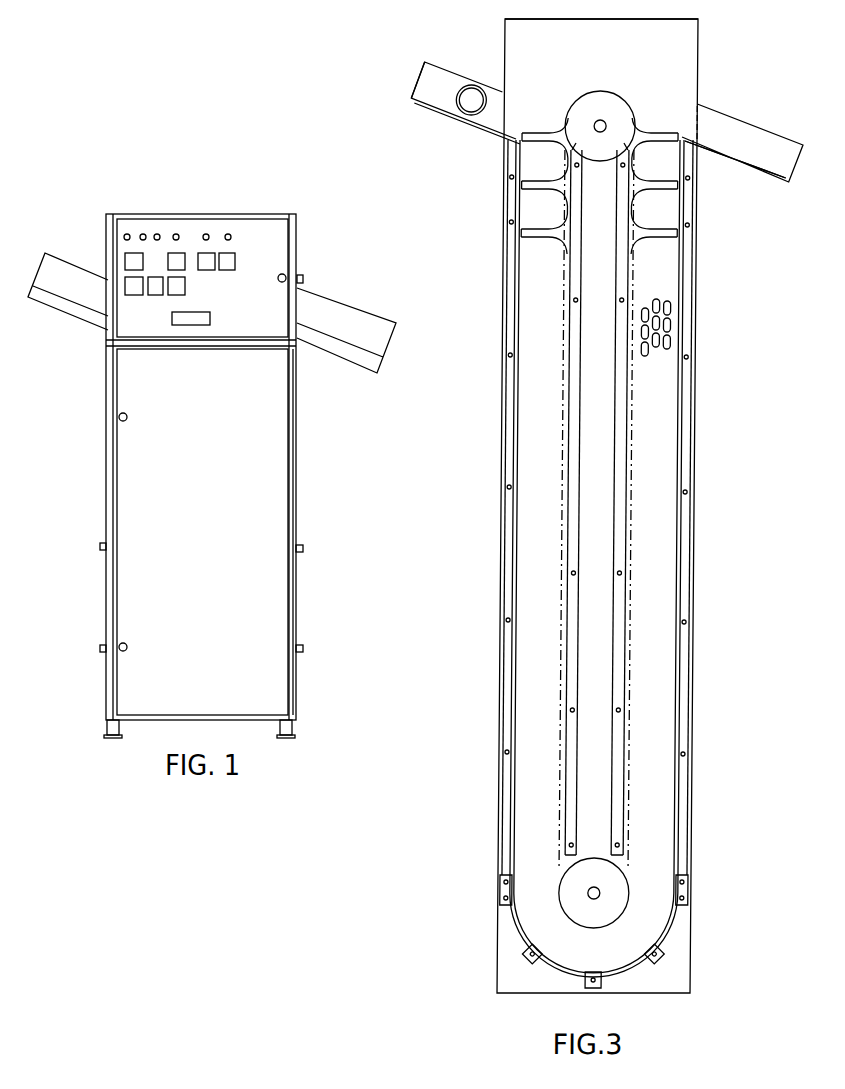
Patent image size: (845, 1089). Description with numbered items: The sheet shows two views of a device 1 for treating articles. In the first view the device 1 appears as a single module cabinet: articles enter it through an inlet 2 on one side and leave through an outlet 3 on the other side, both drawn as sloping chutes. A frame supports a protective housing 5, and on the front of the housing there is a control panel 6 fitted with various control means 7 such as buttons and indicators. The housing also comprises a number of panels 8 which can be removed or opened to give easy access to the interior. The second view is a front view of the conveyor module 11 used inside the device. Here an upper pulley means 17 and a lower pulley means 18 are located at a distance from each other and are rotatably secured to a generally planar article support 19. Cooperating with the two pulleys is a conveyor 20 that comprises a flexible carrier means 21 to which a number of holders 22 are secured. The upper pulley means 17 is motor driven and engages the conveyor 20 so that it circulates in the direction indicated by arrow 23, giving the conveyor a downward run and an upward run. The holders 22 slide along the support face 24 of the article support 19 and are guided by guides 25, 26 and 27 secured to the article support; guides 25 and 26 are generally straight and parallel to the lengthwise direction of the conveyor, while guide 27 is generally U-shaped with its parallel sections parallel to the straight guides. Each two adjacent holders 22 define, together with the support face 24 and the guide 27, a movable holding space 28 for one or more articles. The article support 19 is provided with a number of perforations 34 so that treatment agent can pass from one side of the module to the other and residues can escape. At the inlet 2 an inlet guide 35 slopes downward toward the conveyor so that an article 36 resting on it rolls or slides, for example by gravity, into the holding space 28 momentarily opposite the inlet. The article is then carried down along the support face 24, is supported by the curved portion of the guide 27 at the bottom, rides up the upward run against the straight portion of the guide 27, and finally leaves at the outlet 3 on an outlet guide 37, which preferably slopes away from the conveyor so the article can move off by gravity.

In FIG. 1, the device 1 is at (98, 419).
In FIG. 1, the inlet 2 is at (78, 276).
In FIG. 3, the inlet 2 is at (458, 80).
In FIG. 1, the outlet 3 is at (339, 312).
In FIG. 3, the outlet 3 is at (727, 133).
In FIG. 1, the protective housing 5 is at (290, 503).
In FIG. 1, the control panel 6 is at (284, 238).
In FIG. 1, the control means 7 is at (177, 287).
In FIG. 1, the panels 8 is at (200, 424).
In FIG. 3, the conveyor module 11 is at (490, 606).
In FIG. 3, the upper pulley means 17 is at (613, 110).
In FIG. 3, the lower pulley means 18 is at (617, 917).
In FIG. 3, the article support 19 is at (680, 39).
In FIG. 3, the conveyor 20 is at (541, 121).
In FIG. 3, the flexible carrier means 21 is at (566, 754).
In FIG. 3, the holders 22 is at (559, 243).
In FIG. 3, the arrow 23 is at (544, 395).
In FIG. 3, the support face 24 is at (585, 48).
In FIG. 3, the guide 25 is at (582, 509).
In FIG. 3, the guide 26 is at (628, 509).
In FIG. 3, the guide 27 is at (689, 652).
In FIG. 3, the holding space 28 is at (542, 160).
In FIG. 3, the perforations 34 is at (668, 350).
In FIG. 3, the inlet guide 35 is at (417, 98).
In FIG. 3, the article 36 is at (465, 110).
In FIG. 3, the outlet guide 37 is at (755, 162).